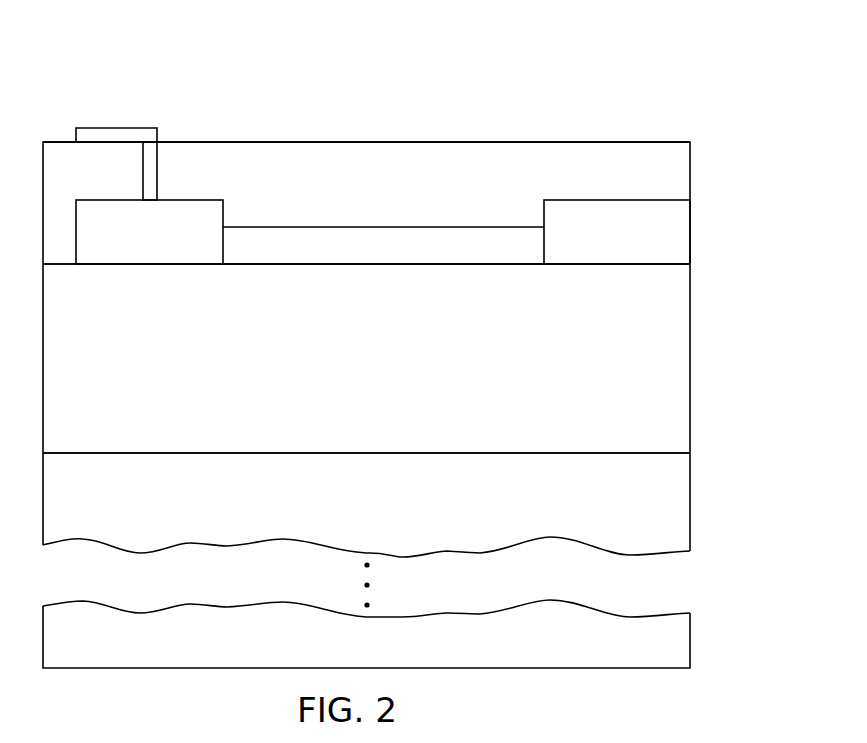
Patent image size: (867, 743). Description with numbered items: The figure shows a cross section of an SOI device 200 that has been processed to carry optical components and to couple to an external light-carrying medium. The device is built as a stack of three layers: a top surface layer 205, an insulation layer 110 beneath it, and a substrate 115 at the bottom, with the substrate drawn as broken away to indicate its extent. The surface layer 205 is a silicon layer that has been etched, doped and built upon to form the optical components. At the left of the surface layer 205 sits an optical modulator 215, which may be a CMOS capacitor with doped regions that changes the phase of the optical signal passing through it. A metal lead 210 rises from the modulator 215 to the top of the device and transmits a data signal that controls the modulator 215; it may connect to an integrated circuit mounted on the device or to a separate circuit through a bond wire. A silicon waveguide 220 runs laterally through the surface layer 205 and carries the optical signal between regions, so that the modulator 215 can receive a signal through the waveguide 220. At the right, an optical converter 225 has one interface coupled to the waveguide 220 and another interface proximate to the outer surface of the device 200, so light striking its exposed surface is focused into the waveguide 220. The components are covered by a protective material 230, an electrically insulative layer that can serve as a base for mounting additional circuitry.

The SOI device 200 is at (712, 115).
The top surface layer 205 is at (696, 143).
The metal lead 210 is at (137, 127).
The optical modulator 215 is at (203, 200).
The silicon waveguide 220 is at (400, 227).
The optical converter 225 is at (608, 200).
The protective material 230 is at (340, 142).
The insulation layer 110 is at (690, 360).
The substrate 115 is at (690, 492).